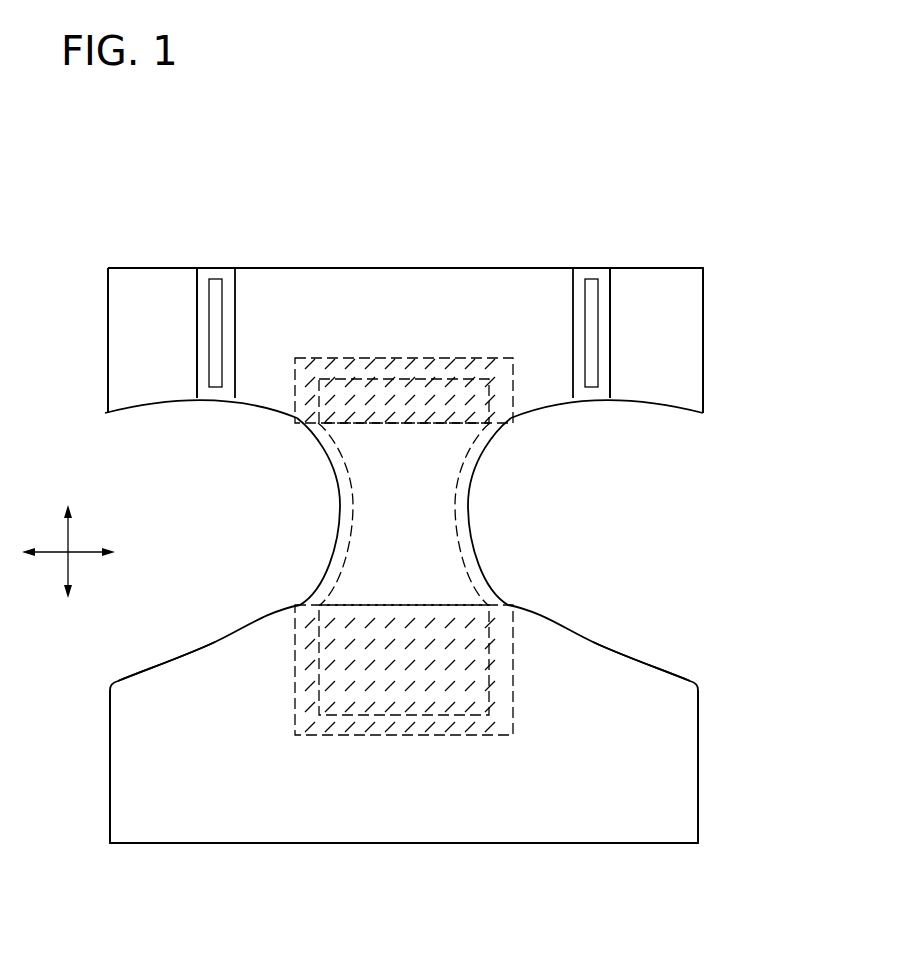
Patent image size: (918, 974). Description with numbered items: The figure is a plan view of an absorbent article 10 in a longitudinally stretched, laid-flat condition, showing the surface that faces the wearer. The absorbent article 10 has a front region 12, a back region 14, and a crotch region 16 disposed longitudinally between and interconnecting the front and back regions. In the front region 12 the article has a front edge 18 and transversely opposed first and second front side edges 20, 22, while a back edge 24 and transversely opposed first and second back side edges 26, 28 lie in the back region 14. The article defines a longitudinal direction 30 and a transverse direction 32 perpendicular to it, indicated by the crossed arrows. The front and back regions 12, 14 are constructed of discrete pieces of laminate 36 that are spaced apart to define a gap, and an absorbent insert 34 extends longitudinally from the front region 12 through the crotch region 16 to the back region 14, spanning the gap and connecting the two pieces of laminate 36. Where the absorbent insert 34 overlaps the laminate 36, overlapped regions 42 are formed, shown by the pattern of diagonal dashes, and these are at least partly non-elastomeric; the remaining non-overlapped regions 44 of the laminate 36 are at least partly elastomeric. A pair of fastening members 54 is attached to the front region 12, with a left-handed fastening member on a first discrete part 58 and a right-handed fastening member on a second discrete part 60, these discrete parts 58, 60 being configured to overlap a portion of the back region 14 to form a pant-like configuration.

The absorbent article 10 is at (627, 156).
The front region 12 is at (724, 292).
The back region 14 is at (423, 891).
The crotch region 16 is at (522, 541).
The front edge 18 is at (490, 268).
The first front side edge 20 is at (703, 362).
The second front side edge 22 is at (105, 301).
The back edge 24 is at (505, 843).
The first back side edge 26 is at (698, 823).
The second back side edge 28 is at (110, 790).
The longitudinal direction 30 is at (68, 568).
The transverse direction 32 is at (82, 552).
The absorbent insert 34 is at (428, 473).
The laminate 36 is at (307, 278).
The overlapped regions 42 is at (492, 385).
The non-overlapped regions 44 is at (257, 380).
The fastening members 54 is at (209, 305).
The first discrete part 58 is at (610, 387).
The second discrete part 60 is at (197, 380).